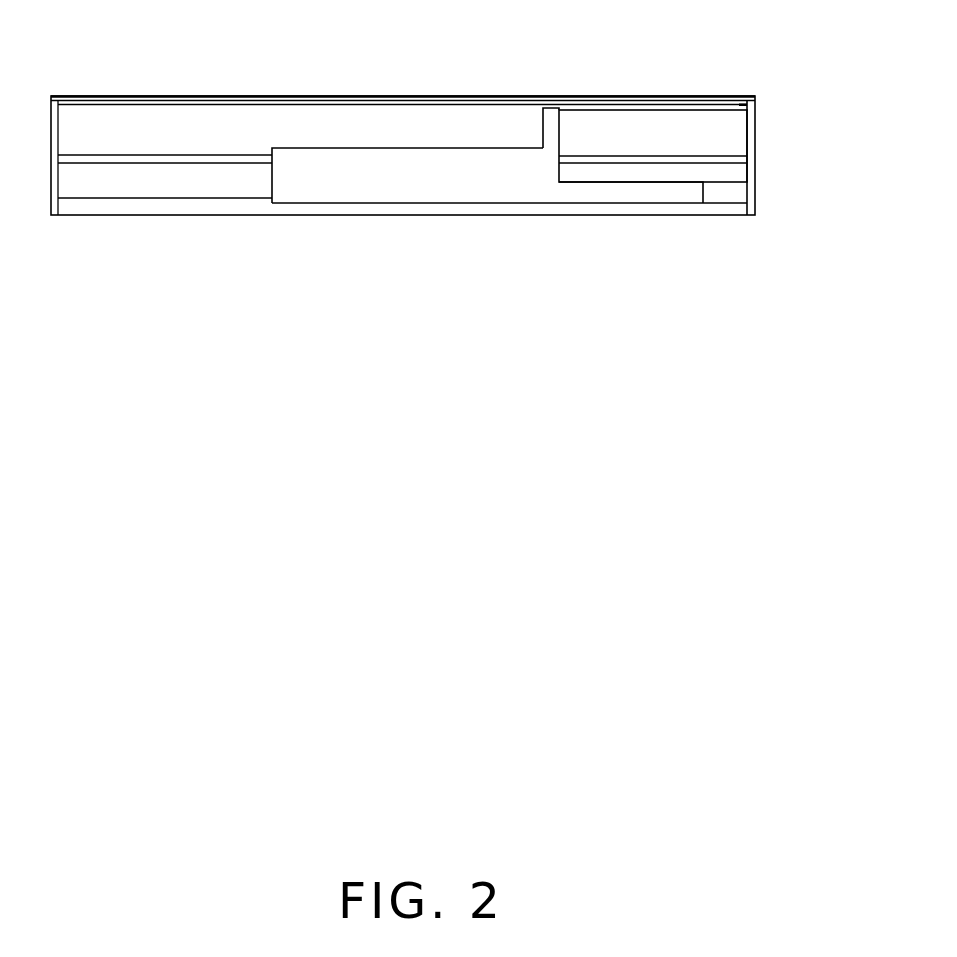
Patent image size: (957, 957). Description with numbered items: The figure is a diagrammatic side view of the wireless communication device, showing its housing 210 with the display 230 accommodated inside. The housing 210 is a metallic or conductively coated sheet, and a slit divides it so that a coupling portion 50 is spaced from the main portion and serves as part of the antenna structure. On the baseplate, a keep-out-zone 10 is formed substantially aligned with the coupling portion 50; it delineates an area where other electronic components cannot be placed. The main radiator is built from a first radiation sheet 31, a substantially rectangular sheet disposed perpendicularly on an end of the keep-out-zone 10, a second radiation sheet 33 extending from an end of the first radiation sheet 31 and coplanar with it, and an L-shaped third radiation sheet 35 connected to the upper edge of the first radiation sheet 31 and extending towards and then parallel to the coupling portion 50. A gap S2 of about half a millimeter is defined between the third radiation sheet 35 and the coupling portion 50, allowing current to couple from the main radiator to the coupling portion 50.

The keep-out-zone 10 is at (715, 157).
The first radiation sheet 31 is at (423, 195).
The second radiation sheet 33 is at (647, 195).
The third radiation sheet 35 is at (553, 129).
The coupling portion 50 is at (690, 100).
The housing 210 is at (748, 190).
The display 230 is at (152, 207).
The gap S2 is at (747, 105).